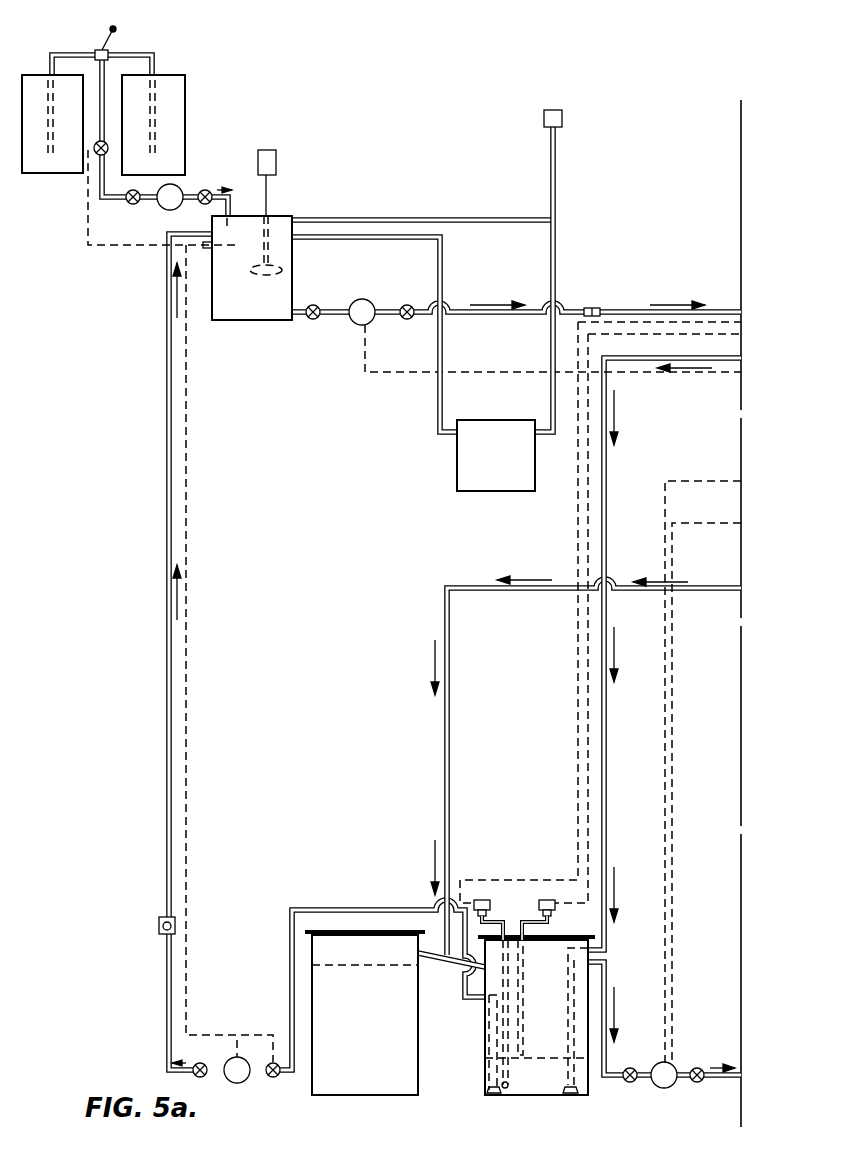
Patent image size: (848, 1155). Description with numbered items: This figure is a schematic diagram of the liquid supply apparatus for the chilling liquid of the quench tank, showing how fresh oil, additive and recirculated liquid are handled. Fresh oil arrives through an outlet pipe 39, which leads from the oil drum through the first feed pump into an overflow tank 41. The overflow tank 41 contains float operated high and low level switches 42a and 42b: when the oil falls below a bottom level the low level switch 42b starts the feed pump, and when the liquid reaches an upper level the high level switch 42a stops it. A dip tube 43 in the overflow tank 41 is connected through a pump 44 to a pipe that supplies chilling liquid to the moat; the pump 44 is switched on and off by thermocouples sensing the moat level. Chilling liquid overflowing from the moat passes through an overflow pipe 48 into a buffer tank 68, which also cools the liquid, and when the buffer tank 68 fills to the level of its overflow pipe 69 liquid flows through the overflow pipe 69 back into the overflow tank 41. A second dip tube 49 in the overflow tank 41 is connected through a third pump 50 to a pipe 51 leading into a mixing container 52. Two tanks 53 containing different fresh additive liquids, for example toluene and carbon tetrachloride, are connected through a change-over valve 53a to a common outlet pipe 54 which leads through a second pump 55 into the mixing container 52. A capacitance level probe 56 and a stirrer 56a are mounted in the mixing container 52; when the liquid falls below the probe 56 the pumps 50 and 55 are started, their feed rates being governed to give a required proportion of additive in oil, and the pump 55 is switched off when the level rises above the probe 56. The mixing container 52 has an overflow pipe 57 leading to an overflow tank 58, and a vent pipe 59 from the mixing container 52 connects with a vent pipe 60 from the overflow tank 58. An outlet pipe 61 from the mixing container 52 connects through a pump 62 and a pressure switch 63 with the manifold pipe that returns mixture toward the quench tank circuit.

The outlet pipe 39 is at (605, 718).
The overflow tank 41 is at (588, 1078).
The high level switch 42a is at (547, 898).
The low level switch 42b is at (483, 898).
The dip tube 43 is at (570, 1042).
The pump 44 is at (667, 1083).
The overflow pipe 48 is at (633, 592).
The dip tube 49 is at (488, 1047).
The third pump 50 is at (240, 1063).
The pipe 51 is at (162, 990).
The mixing container 52 is at (270, 292).
The tanks 53 is at (178, 115).
The change-over valve 53a is at (102, 40).
The common outlet pipe 54 is at (103, 90).
The second pump 55 is at (165, 200).
The capacitance level probe 56 is at (238, 245).
The stirrer 56a is at (284, 262).
The overflow pipe 57 is at (437, 280).
The overflow tank 58 is at (467, 466).
The vent pipe 59 is at (487, 222).
The vent pipe 60 is at (556, 182).
The outlet pipe 61 is at (312, 322).
The pump 62 is at (358, 318).
The pressure switch 63 is at (594, 308).
The buffer tank 68 is at (408, 1066).
The overflow pipe 69 is at (447, 967).